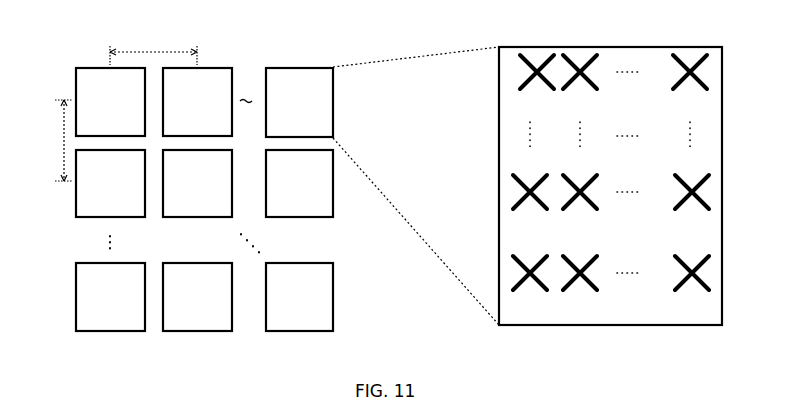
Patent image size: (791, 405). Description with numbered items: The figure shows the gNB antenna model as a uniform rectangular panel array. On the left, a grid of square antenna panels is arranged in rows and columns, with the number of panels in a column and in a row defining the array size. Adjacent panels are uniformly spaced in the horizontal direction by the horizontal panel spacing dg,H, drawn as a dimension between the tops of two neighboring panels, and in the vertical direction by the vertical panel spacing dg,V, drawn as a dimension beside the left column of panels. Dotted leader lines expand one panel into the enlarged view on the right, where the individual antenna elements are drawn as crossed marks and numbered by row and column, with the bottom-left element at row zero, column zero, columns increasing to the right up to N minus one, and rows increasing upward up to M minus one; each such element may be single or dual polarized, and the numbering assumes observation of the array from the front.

The horizontal panel spacing dg,H is at (153, 39).
The vertical panel spacing dg,V is at (44, 140).